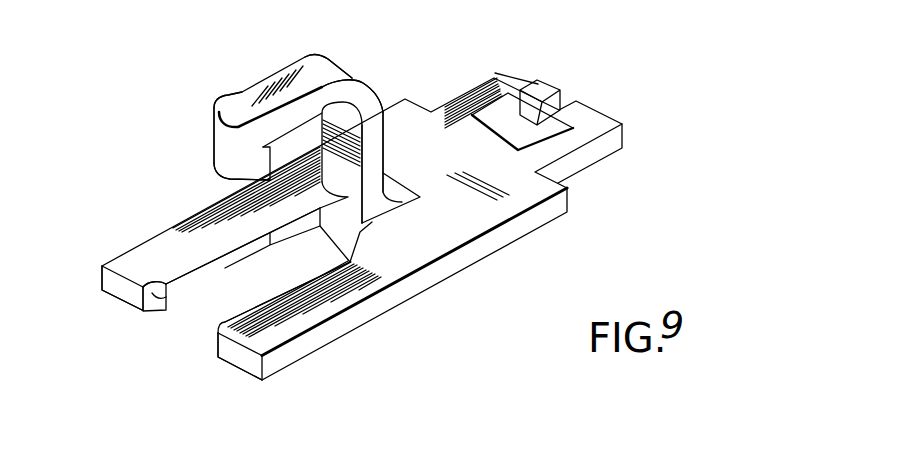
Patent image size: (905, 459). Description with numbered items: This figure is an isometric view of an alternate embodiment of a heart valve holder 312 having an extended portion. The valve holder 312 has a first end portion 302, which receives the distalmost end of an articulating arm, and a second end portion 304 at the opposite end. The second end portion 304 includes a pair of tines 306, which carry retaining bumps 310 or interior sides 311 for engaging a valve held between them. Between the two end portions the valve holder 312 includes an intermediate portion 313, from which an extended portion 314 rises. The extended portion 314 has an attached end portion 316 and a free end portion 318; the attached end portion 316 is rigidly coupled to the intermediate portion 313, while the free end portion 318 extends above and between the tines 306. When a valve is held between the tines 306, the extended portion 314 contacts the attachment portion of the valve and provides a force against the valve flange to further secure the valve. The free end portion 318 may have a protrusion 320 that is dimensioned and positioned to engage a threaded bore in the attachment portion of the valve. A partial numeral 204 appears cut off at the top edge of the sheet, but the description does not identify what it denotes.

The connector (partial numeral) 204 is at (40, 7).
The first end portion 302 is at (507, 73).
The second end portion 304 is at (222, 363).
The tines 306 is at (308, 219).
The retaining bumps 310 is at (158, 308).
The interior sides 311 is at (282, 298).
The valve holder 312 is at (424, 237).
The intermediate portion 313 is at (423, 237).
The extended portion 314 is at (335, 72).
The attached end portion 316 is at (398, 198).
The free end portion 318 is at (233, 107).
The protrusion 320 is at (232, 178).